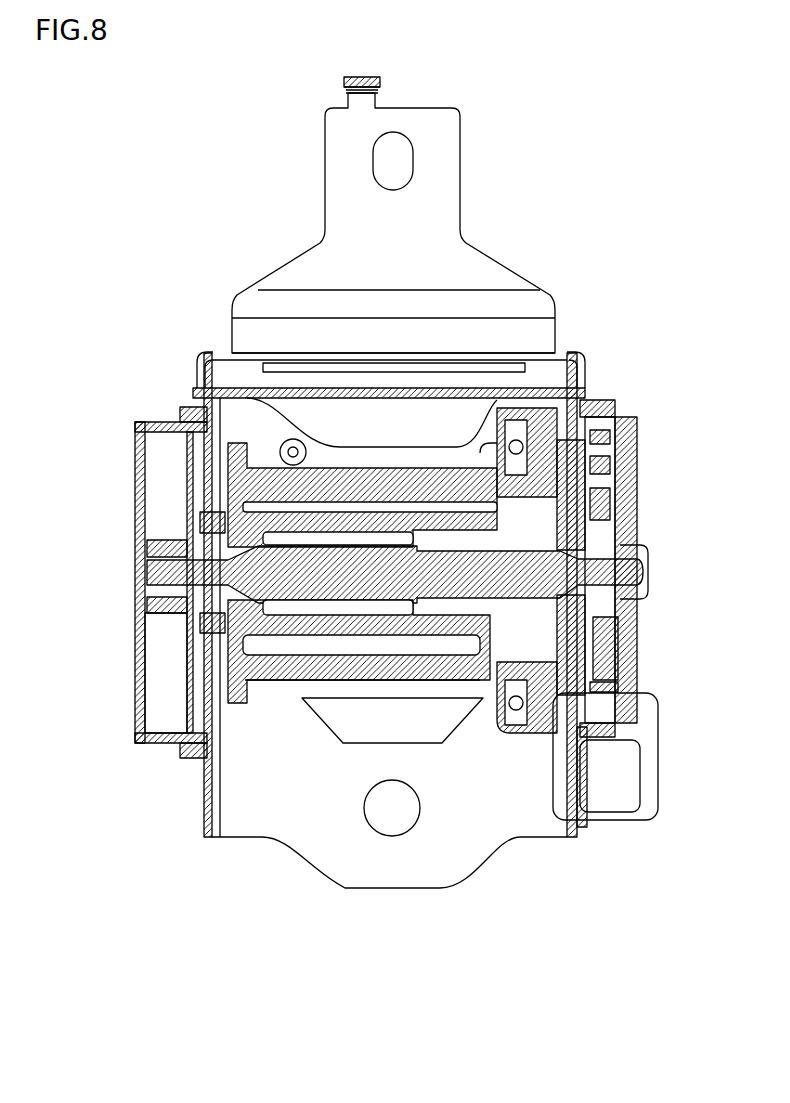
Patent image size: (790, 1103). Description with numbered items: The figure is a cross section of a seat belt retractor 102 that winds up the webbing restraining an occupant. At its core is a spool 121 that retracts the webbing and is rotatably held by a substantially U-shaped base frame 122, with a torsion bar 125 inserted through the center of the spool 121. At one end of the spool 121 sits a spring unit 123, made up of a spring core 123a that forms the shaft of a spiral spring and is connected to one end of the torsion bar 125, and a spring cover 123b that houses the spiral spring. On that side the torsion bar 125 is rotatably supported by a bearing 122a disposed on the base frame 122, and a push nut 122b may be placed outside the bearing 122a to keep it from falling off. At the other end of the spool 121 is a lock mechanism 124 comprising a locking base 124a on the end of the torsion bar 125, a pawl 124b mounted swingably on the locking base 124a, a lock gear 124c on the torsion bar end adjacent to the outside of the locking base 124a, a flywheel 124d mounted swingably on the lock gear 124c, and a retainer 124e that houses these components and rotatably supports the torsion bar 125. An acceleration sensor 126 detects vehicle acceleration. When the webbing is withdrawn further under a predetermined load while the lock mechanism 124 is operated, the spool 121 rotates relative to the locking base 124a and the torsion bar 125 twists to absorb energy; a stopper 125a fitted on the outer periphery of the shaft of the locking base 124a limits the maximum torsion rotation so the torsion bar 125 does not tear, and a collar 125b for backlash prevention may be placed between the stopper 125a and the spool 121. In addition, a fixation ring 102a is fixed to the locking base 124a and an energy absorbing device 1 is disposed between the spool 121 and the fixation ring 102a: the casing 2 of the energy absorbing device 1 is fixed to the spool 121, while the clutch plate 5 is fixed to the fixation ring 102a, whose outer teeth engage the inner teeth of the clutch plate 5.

The energy absorbing device 1 is at (398, 641).
The casing 2 is at (517, 570).
The clutch plate 5 is at (495, 490).
The seat belt retractor 102 is at (602, 280).
The fixation ring 102a is at (530, 520).
The spool 121 is at (362, 573).
The base frame 122 is at (215, 782).
The bearing 122a is at (246, 688).
The push nut 122b is at (150, 596).
The spring unit 123 is at (139, 582).
The spring core 123a is at (170, 545).
The spring cover 123b is at (140, 652).
The lock mechanism 124 is at (644, 568).
The locking base 124a is at (606, 503).
The pawl 124b is at (592, 465).
The lock gear 124c is at (612, 442).
The flywheel 124d is at (616, 633).
The retainer 124e is at (632, 668).
The torsion bar 125 is at (392, 582).
The stopper 125a is at (455, 680).
The collar 125b is at (432, 502).
The acceleration sensor 126 is at (661, 763).